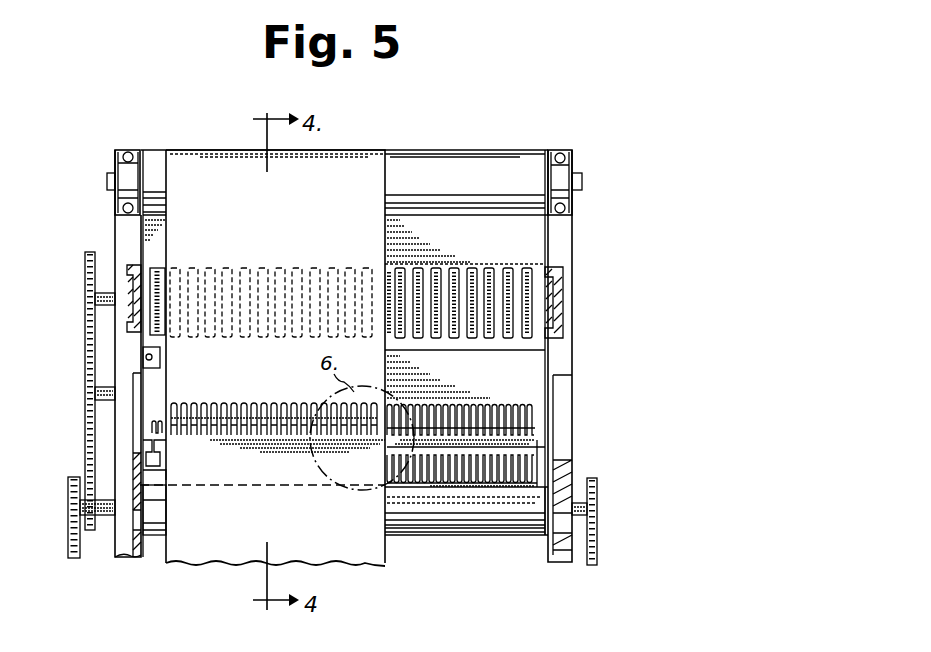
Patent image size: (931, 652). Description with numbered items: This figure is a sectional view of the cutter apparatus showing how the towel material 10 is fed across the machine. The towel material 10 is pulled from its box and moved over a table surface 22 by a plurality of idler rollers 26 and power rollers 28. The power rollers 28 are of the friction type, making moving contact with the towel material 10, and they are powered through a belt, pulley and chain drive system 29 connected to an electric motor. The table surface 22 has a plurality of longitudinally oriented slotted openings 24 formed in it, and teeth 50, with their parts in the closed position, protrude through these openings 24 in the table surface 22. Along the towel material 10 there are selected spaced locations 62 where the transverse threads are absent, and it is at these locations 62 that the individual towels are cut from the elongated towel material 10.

The towel material 10 is at (363, 158).
The table surface 22 is at (533, 378).
The slotted openings 24 is at (535, 435).
The idler rollers 26 is at (502, 163).
The power rollers 28 is at (530, 297).
The belt, pulley and chain drive system 29 is at (85, 355).
The teeth 50 is at (191, 437).
The selected spaced locations 62 is at (212, 403).